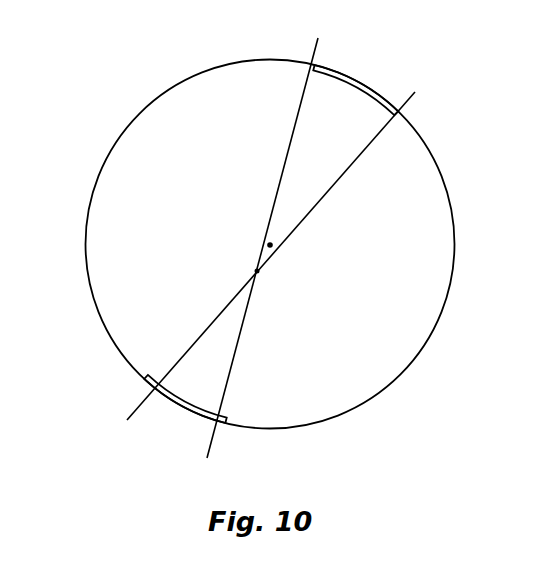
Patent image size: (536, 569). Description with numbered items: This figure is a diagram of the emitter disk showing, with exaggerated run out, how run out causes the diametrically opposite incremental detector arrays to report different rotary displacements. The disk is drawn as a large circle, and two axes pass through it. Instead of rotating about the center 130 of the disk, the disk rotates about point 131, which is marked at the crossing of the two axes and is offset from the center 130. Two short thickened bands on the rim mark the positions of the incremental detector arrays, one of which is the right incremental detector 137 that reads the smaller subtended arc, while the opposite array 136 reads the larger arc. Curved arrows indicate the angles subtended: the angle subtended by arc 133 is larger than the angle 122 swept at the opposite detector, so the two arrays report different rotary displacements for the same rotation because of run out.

The angle between axes 122 is at (215, 320).
The center of the emitter disk 130 is at (272, 247).
The point of rotation 131 is at (259, 273).
The arc 133 is at (283, 172).
The arc segment (74) 136 is at (328, 67).
The right incremental detector 137 is at (178, 408).